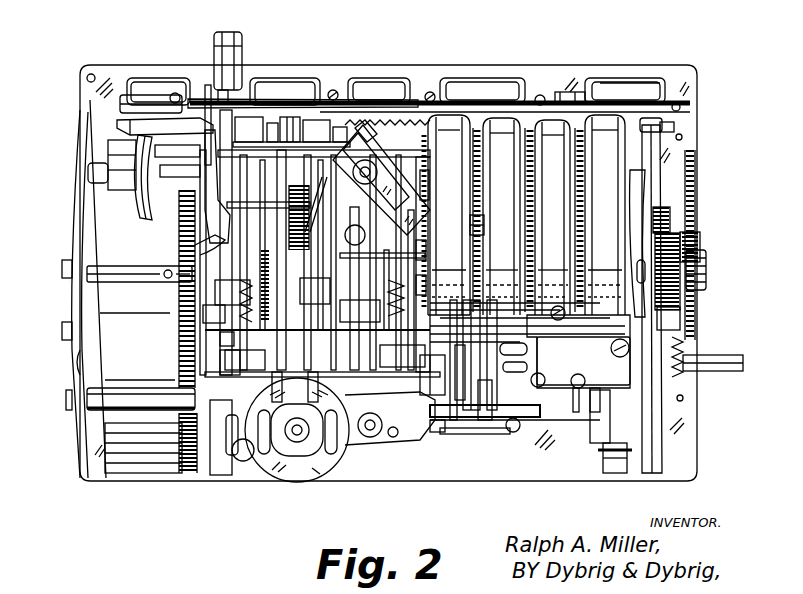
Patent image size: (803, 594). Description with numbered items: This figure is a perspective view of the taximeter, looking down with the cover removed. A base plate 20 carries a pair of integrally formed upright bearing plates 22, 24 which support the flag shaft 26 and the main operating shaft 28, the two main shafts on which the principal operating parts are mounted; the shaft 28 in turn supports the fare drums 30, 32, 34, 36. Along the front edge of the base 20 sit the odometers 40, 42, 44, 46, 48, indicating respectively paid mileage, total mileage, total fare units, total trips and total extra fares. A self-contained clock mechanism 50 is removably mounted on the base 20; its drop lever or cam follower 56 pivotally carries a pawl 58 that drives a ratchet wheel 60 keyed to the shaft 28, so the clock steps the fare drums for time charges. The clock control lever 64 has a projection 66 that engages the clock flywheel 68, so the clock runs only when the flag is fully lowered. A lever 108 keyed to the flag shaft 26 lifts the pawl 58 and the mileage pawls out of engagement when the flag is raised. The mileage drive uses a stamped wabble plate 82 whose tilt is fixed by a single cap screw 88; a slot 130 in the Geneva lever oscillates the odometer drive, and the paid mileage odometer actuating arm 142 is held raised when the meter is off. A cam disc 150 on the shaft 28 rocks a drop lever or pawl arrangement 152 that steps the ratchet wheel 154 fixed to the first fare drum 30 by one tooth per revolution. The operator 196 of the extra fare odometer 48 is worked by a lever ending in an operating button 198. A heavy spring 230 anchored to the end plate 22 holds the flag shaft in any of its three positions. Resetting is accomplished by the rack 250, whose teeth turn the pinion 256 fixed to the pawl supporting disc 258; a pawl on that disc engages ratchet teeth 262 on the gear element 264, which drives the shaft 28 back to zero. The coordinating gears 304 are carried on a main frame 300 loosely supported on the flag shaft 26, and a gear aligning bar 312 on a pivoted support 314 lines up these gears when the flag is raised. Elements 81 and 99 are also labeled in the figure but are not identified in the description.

The base plate 20 is at (692, 449).
The upright bearing plate 22 is at (647, 408).
The upright bearing plate 24 is at (255, 375).
The flag shaft 26 is at (222, 363).
The main operating shaft 28 is at (478, 228).
The fare drum 30 is at (457, 153).
The fare drum 32 is at (507, 161).
The fare drum 34 is at (562, 157).
The fare drum 36 is at (615, 154).
The paid mileage odometer 40 is at (634, 90).
The total mileage odometer 42 is at (487, 88).
The total units odometer 44 is at (383, 88).
The total trips odometer 46 is at (294, 86).
The total extra fares odometer 48 is at (165, 86).
The clock mechanism 50 is at (80, 362).
The drop lever or cam follower 56 is at (232, 338).
The pawl 58 is at (223, 313).
The ratchet wheel 60 is at (233, 243).
The clock starting and stopping lever 64 is at (192, 296).
The projection 66 is at (186, 120).
The flywheel 68 is at (146, 200).
The contact 81 is at (299, 455).
The wabble plate 82 is at (310, 472).
The cap screw 88 is at (297, 425).
The plate 99 is at (342, 460).
The lever 108 is at (332, 207).
The slot 130 is at (487, 427).
The paid mileage odometer actuating arm 142 is at (571, 100).
The cam disc 150 is at (424, 253).
The drop lever or pawl arrangement 152 is at (424, 288).
The ratchet wheel 154 is at (427, 190).
The operator 196 is at (208, 96).
The operating button 198 is at (240, 40).
The heavy spring 230 is at (623, 447).
The fare drum resetting rack 250 is at (695, 173).
The pinion 256 is at (708, 266).
The pawl supporting disc 258 is at (682, 240).
The ratchet teeth 262 is at (700, 252).
The gear element 264 is at (665, 212).
The main frame 300 is at (445, 397).
The coordinating gears 304 is at (572, 392).
The gear aligning bar 312 is at (512, 412).
The pivoted support 314 is at (455, 397).